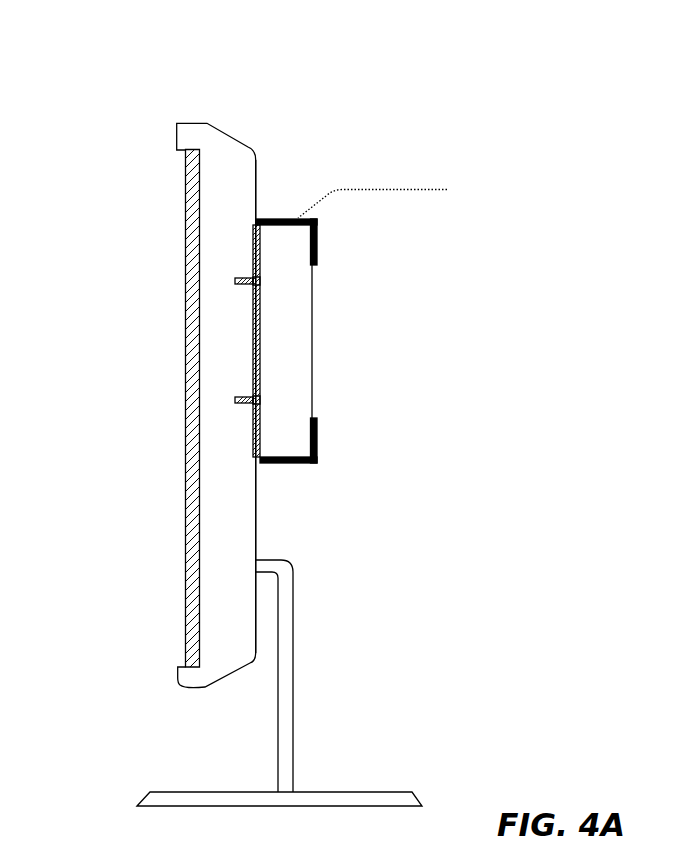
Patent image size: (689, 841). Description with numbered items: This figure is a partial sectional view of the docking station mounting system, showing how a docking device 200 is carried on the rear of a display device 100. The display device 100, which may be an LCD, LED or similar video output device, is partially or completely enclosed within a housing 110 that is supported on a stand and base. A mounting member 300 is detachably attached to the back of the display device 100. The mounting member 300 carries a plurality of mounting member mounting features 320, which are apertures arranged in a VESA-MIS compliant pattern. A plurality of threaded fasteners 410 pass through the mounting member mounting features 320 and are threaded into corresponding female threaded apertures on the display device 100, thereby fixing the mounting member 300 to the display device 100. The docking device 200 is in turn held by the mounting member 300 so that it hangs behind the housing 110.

The display device 100 is at (168, 142).
The housing 110 is at (250, 287).
The docking device 200 is at (316, 347).
The mounting member 300 is at (273, 215).
The mounting member mounting features 320 is at (258, 279).
The threaded fasteners 410 is at (235, 281).